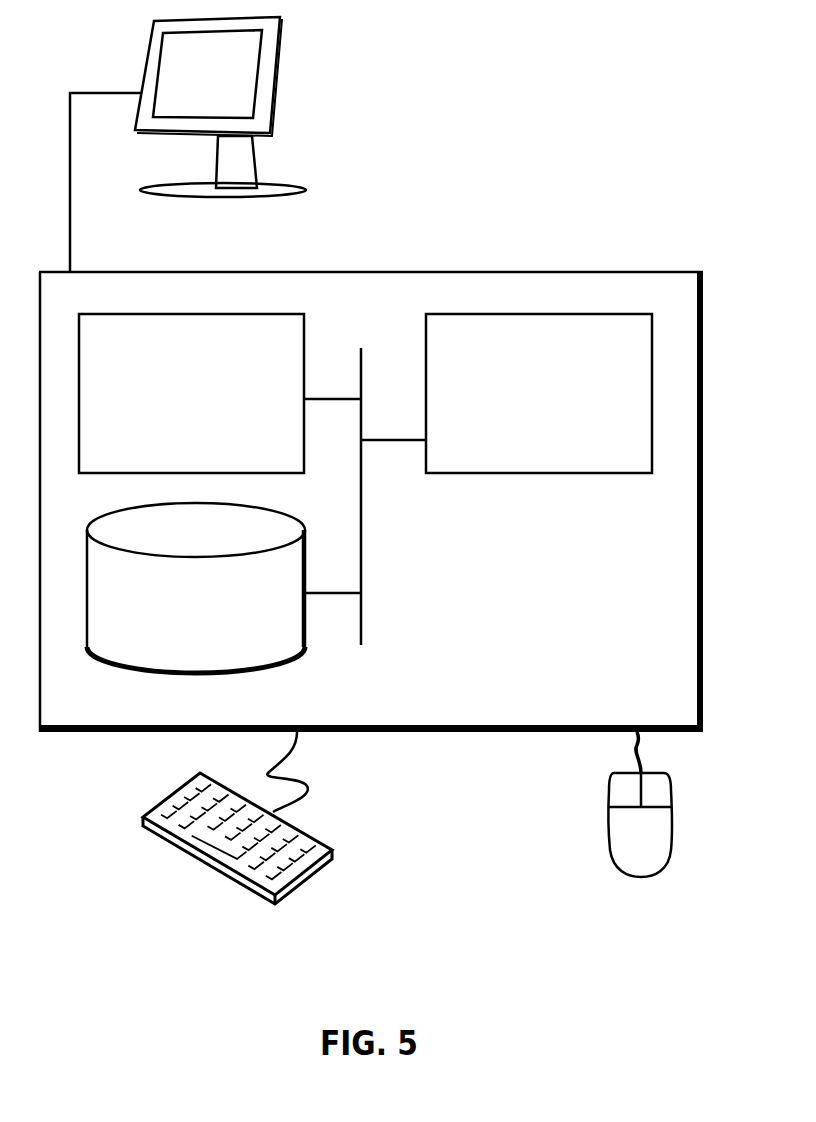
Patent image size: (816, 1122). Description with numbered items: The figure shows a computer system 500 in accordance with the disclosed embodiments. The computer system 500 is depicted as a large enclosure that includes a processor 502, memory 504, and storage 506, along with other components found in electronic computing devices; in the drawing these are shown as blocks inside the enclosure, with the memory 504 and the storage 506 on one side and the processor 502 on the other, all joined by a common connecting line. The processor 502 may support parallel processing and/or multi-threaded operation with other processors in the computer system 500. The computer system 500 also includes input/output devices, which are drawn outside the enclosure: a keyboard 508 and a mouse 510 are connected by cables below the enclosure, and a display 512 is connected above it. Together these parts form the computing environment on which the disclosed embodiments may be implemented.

The computer system 500 is at (416, 250).
The processor 502 is at (521, 406).
The memory 504 is at (171, 406).
The storage device 506 is at (177, 618).
The keyboard 508 is at (163, 833).
The mouse 510 is at (620, 847).
The display monitor 512 is at (188, 145).